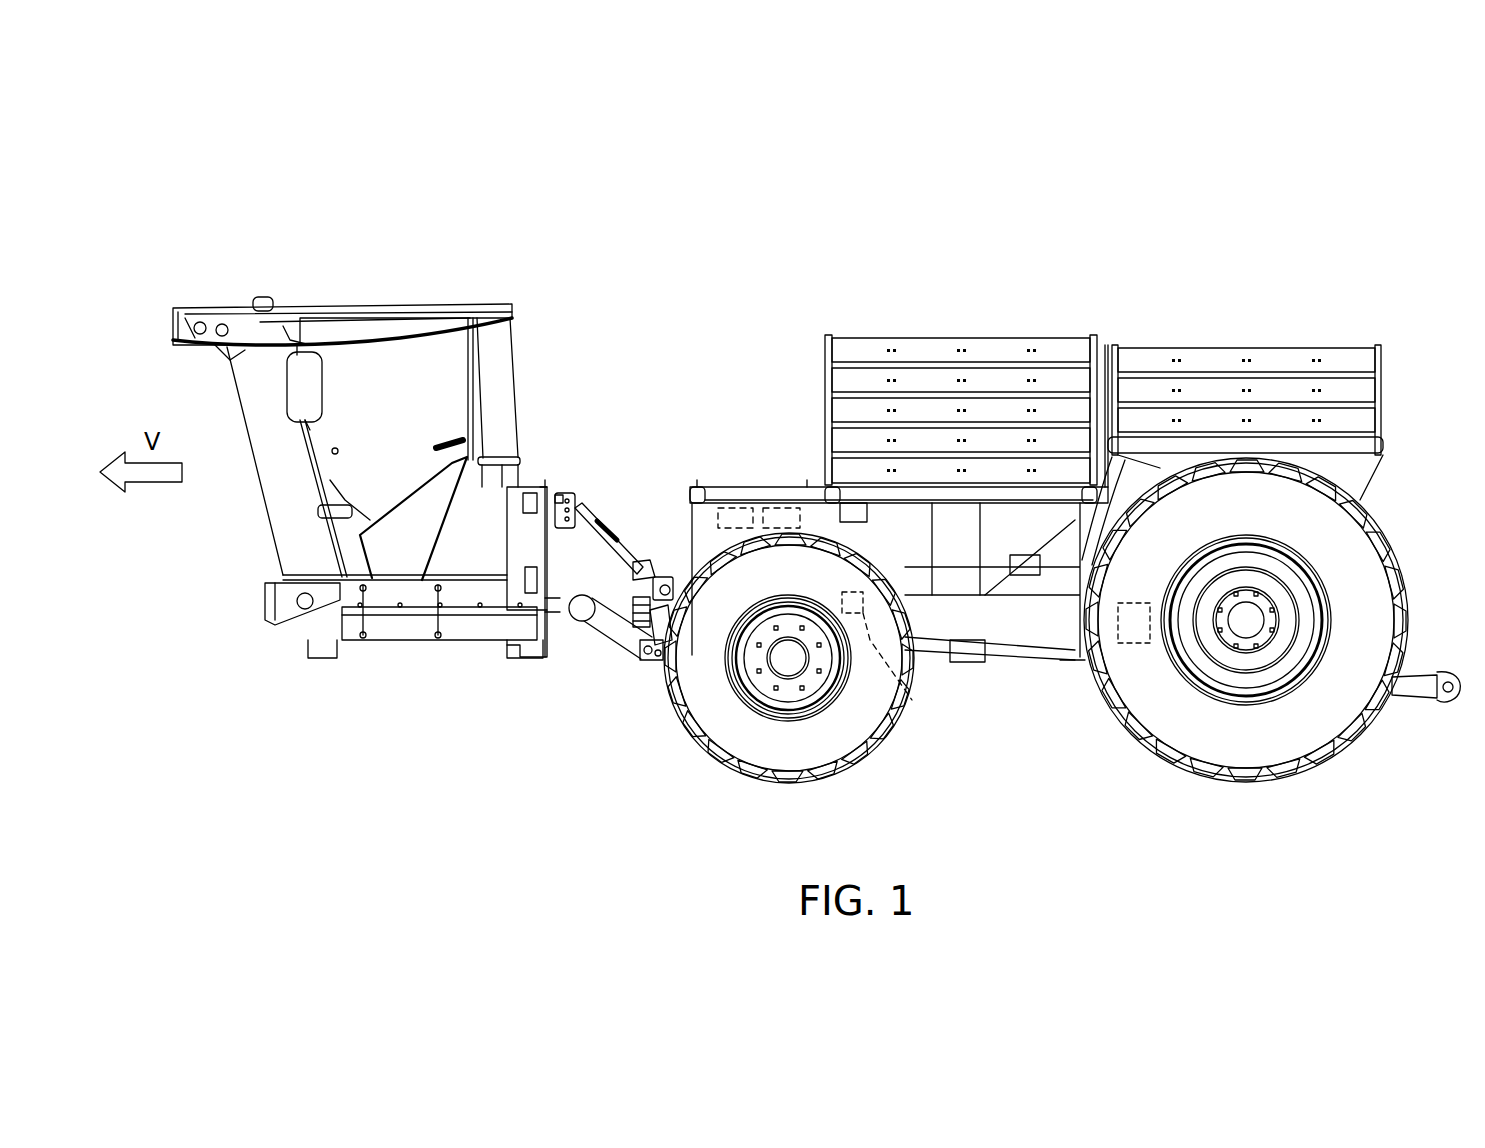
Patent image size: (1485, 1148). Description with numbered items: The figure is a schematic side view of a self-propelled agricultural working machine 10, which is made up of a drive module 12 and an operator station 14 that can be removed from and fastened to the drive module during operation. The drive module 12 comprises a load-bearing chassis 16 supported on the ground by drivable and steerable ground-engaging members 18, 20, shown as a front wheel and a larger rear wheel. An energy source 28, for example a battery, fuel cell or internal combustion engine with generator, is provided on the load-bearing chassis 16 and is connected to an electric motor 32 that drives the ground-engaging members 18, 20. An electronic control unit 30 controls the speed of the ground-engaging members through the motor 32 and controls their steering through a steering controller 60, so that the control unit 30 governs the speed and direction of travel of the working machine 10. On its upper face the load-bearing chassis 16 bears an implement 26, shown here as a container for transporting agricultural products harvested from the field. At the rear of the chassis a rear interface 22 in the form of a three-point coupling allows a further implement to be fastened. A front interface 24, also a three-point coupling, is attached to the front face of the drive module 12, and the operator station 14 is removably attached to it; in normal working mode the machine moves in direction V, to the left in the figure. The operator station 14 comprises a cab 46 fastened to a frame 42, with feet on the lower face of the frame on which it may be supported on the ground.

The self-propelled agricultural working machine 10 is at (1133, 143).
The drive module 12 is at (995, 718).
The operator station 14 is at (540, 290).
The load-bearing chassis 16 is at (1057, 633).
The ground-engaging member 18 is at (723, 703).
The ground-engaging member 20 is at (1325, 692).
The rear interface 22 is at (1417, 672).
The front interface 24 is at (620, 505).
The implement 26 is at (1135, 338).
The energy source 28 is at (735, 505).
The electronic control unit 30 is at (778, 505).
The electric motor 32 is at (1133, 657).
The frame 42 is at (478, 633).
The cab 46 is at (357, 468).
The steering controller 60 is at (912, 700).